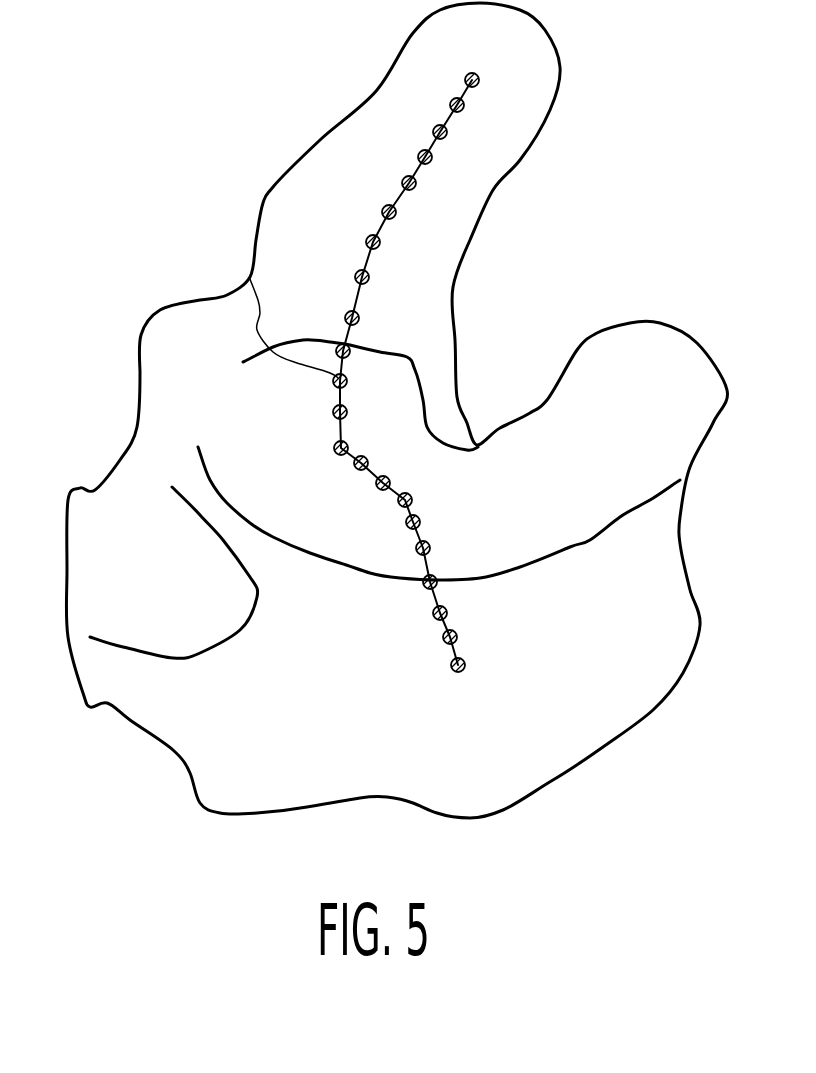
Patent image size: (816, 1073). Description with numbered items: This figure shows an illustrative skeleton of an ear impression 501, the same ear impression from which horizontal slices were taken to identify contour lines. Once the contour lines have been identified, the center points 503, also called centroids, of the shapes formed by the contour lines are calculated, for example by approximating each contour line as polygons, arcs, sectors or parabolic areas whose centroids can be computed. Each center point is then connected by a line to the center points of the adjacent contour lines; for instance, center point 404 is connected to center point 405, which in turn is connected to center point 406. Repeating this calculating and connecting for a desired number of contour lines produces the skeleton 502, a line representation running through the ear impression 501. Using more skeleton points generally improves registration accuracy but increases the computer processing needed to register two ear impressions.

The ear impression 501 is at (262, 89).
The skeleton 502 is at (340, 400).
The center points 503 is at (391, 374).
The center point 404 is at (480, 80).
The center point 405 is at (380, 243).
The center point 406 is at (350, 351).